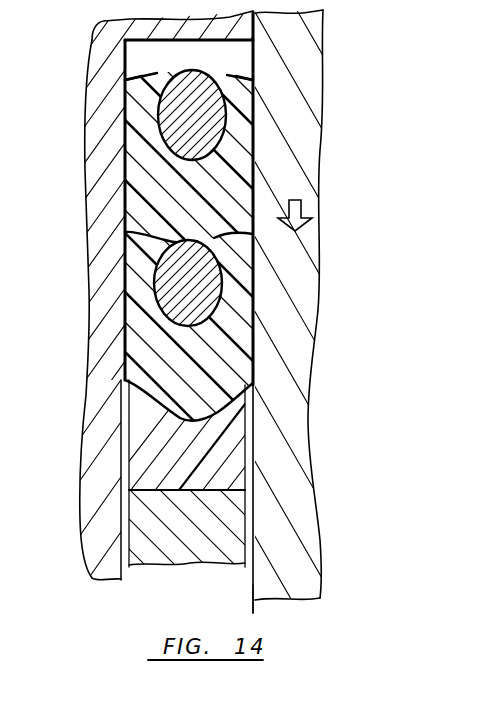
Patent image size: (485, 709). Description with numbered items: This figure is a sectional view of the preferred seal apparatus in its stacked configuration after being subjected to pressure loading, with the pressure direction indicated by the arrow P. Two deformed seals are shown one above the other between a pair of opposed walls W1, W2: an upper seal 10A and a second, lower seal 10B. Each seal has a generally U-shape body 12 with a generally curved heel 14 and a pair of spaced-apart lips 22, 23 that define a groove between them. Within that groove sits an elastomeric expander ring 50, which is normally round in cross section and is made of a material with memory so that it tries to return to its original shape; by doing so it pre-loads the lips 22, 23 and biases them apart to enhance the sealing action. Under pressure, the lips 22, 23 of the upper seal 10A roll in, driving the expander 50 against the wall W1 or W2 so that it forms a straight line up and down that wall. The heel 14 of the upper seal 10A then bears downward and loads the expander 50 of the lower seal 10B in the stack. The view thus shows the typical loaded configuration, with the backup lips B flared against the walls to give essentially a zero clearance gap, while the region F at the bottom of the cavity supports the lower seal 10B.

The upper seal 10A is at (286, 154).
The lower seal 10B is at (138, 372).
The U-shape body 12 is at (140, 174).
The heel portion 14 is at (125, 232).
The lip 22 is at (134, 73).
The lip 23 is at (246, 76).
The elastomeric expander ring 50 is at (147, 97).
The backup lips B is at (232, 413).
The bottom block F is at (178, 544).
The pressure direction P is at (312, 207).
The wall W1 is at (123, 577).
The wall W2 is at (251, 584).